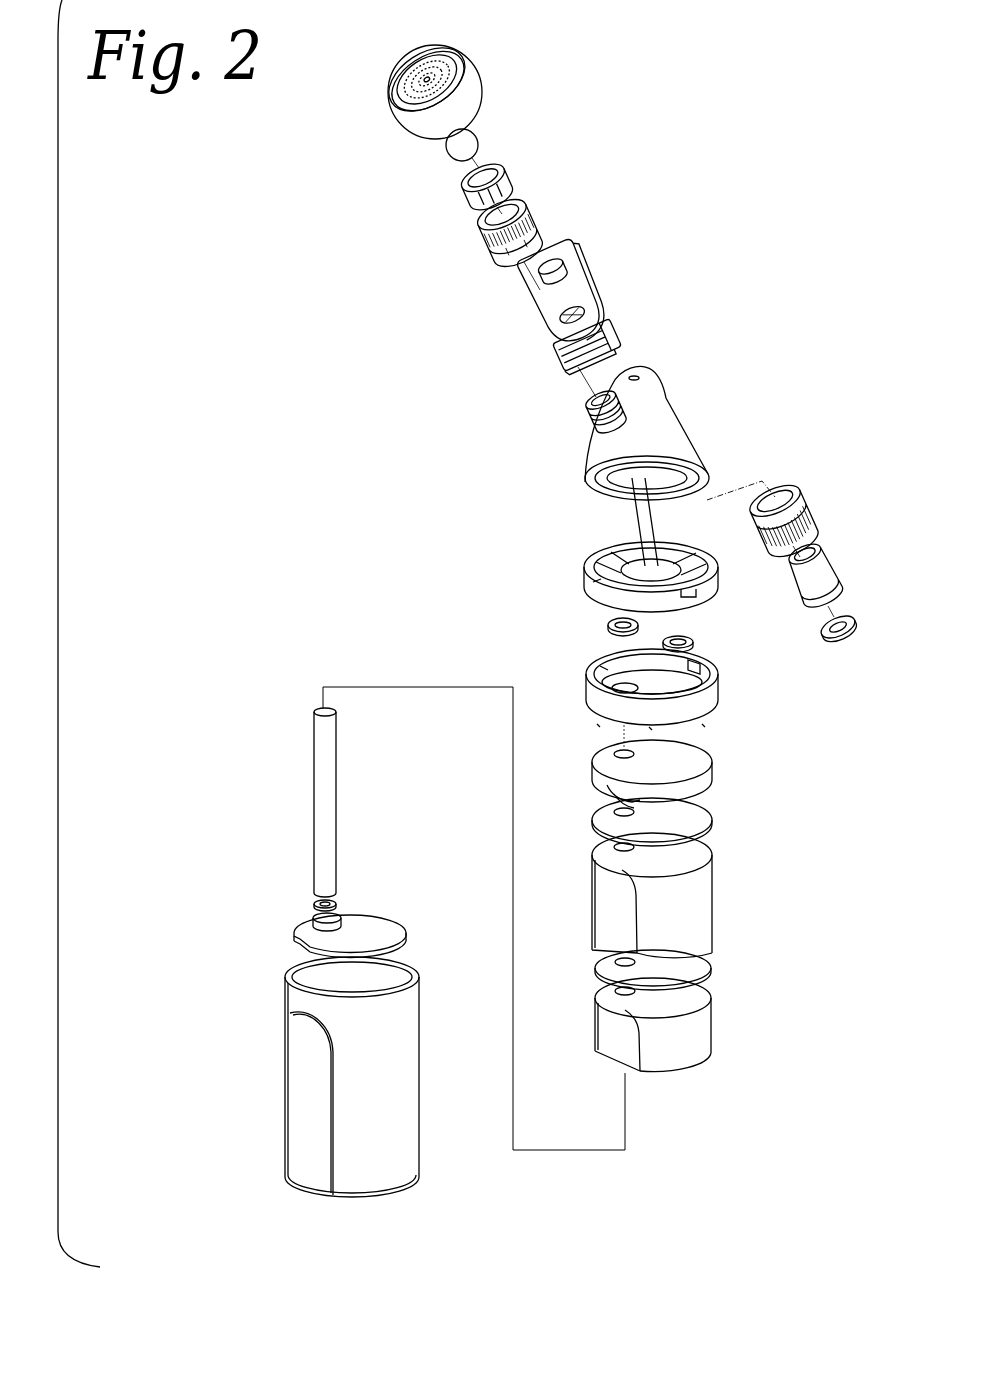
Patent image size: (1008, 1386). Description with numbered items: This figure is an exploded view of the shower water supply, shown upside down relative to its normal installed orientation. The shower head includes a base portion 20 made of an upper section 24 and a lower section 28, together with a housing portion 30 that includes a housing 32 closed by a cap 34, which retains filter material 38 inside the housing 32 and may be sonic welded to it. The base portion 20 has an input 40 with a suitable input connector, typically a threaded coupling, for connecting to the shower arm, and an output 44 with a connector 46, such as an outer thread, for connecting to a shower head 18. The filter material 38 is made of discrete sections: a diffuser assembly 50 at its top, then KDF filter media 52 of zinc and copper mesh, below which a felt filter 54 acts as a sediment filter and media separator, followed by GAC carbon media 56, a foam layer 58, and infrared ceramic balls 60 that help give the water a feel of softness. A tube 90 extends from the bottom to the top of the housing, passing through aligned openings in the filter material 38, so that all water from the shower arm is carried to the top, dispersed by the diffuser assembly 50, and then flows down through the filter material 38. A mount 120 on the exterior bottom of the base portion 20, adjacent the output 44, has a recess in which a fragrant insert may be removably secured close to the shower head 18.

The shower head 18 is at (357, 82).
The mount 120 is at (591, 266).
The output 44 is at (657, 383).
The lower section 28 is at (683, 443).
The connector 46 is at (596, 398).
The base portion 20 is at (553, 375).
The input 40 is at (807, 476).
The upper section 24 is at (710, 590).
The cap 34 is at (583, 695).
The housing portion 30 is at (740, 645).
The infrared ceramic balls 60 is at (702, 783).
The foam layer 58 is at (698, 818).
The GAC carbon media 56 is at (684, 929).
The felt filter 54 is at (700, 965).
The KDF-55 filter media 52 is at (684, 1056).
The filter material 38 is at (573, 743).
The tube 90 is at (322, 805).
The diffuser assembly 50 is at (373, 932).
The housing 32 is at (320, 1118).